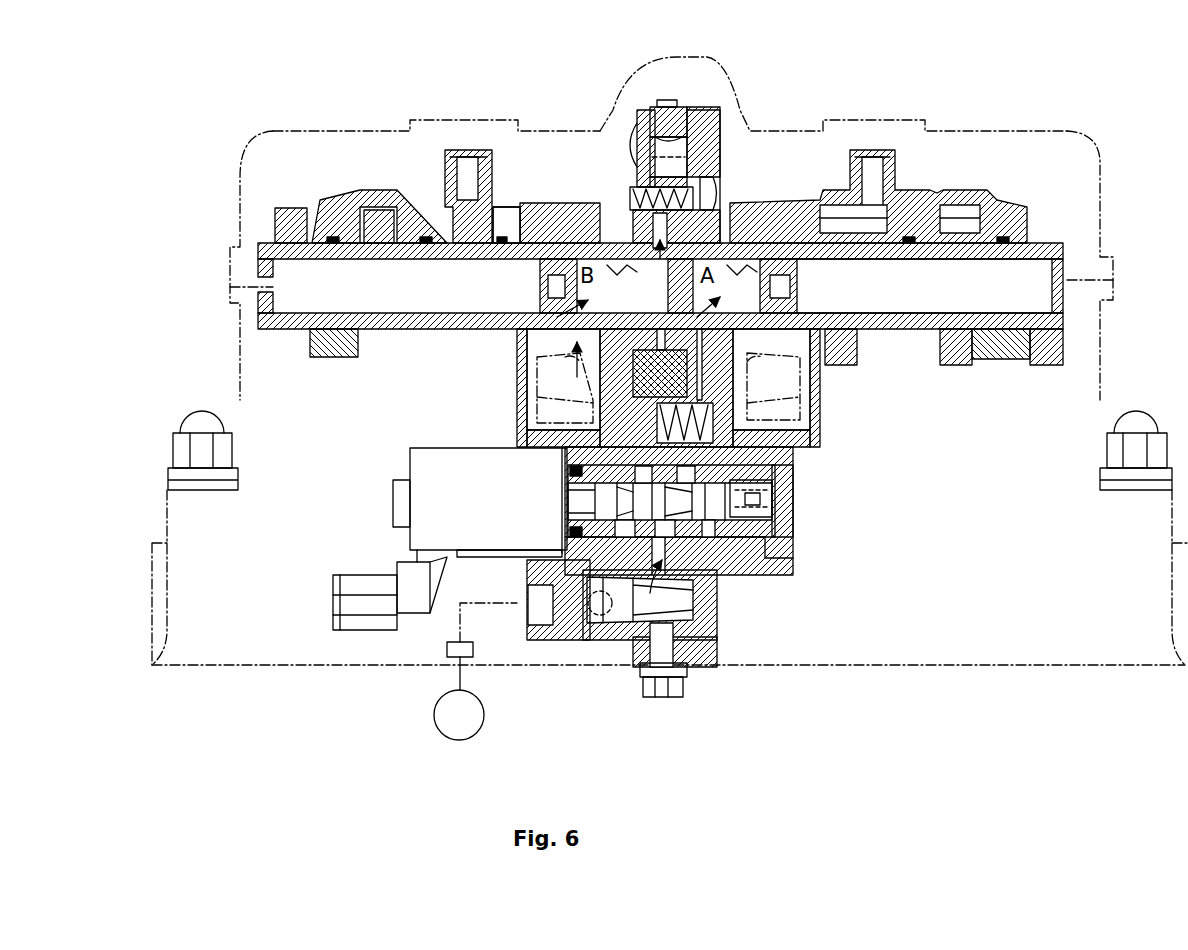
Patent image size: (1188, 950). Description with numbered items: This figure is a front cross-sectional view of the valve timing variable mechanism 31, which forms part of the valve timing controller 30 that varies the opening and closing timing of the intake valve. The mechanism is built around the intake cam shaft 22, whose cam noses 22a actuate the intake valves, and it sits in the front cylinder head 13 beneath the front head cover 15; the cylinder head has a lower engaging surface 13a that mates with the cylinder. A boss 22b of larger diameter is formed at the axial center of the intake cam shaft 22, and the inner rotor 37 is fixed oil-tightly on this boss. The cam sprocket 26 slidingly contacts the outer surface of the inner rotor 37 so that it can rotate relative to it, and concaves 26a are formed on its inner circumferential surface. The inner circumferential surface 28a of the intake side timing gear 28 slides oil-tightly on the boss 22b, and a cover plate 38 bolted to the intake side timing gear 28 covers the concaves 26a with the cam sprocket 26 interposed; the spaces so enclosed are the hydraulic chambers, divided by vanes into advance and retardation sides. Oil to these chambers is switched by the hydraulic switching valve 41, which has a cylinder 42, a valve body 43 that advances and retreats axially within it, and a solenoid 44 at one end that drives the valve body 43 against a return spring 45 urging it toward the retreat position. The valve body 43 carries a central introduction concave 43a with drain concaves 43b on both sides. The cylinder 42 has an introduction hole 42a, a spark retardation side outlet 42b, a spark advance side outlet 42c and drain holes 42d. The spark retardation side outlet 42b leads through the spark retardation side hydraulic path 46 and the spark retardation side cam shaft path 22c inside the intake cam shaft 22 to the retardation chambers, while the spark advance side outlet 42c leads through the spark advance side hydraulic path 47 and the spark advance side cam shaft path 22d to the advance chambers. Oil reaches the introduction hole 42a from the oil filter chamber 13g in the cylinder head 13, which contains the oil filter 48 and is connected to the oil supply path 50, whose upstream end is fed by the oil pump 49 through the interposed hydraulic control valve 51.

The front cylinder head 13 is at (237, 357).
The lower engaging surface of front cylinder head 13a is at (387, 663).
The oil filter chamber 13g is at (620, 622).
The front head cover 15 is at (265, 140).
The intake cam shaft 22 is at (437, 333).
The cam nose of intake cam shaft 22a is at (300, 208).
The boss of intake cam shaft 22b is at (630, 237).
The spark retardation side cam shaft path 22c is at (637, 230).
The spark advance side cam shaft path 22d is at (797, 293).
The cam sprocket 26 is at (668, 95).
The concave of cam sprocket 26a is at (680, 123).
The intake side timing gear 28 is at (707, 107).
The inner circumferential surface of intake side timing gear 28a is at (727, 180).
The valve timing controller 30 is at (840, 497).
The valve timing variable mechanism 31 is at (720, 163).
The inner rotor 37 is at (645, 395).
The cover plate 38 is at (653, 110).
The hydraulic switching valve 41 is at (800, 530).
The cylinder 42 is at (797, 467).
The introduction hole 42a is at (713, 580).
The spark retardation side outlet 42b is at (580, 467).
The spark advance side outlet 42c is at (720, 560).
The drain hole 42d is at (593, 550).
The valve body 43 is at (760, 502).
The introduction concave 43a is at (733, 573).
The drain concave 43b is at (580, 513).
The solenoid 44 is at (432, 444).
The return spring 45 is at (793, 483).
The spark retardation side hydraulic path 46 is at (530, 407).
The spark advance side hydraulic path 47 is at (800, 407).
The oil filter 48 is at (680, 640).
The oil pump 49 is at (482, 720).
The oil supply path 50 is at (600, 615).
The hydraulic control valve 51 is at (447, 650).